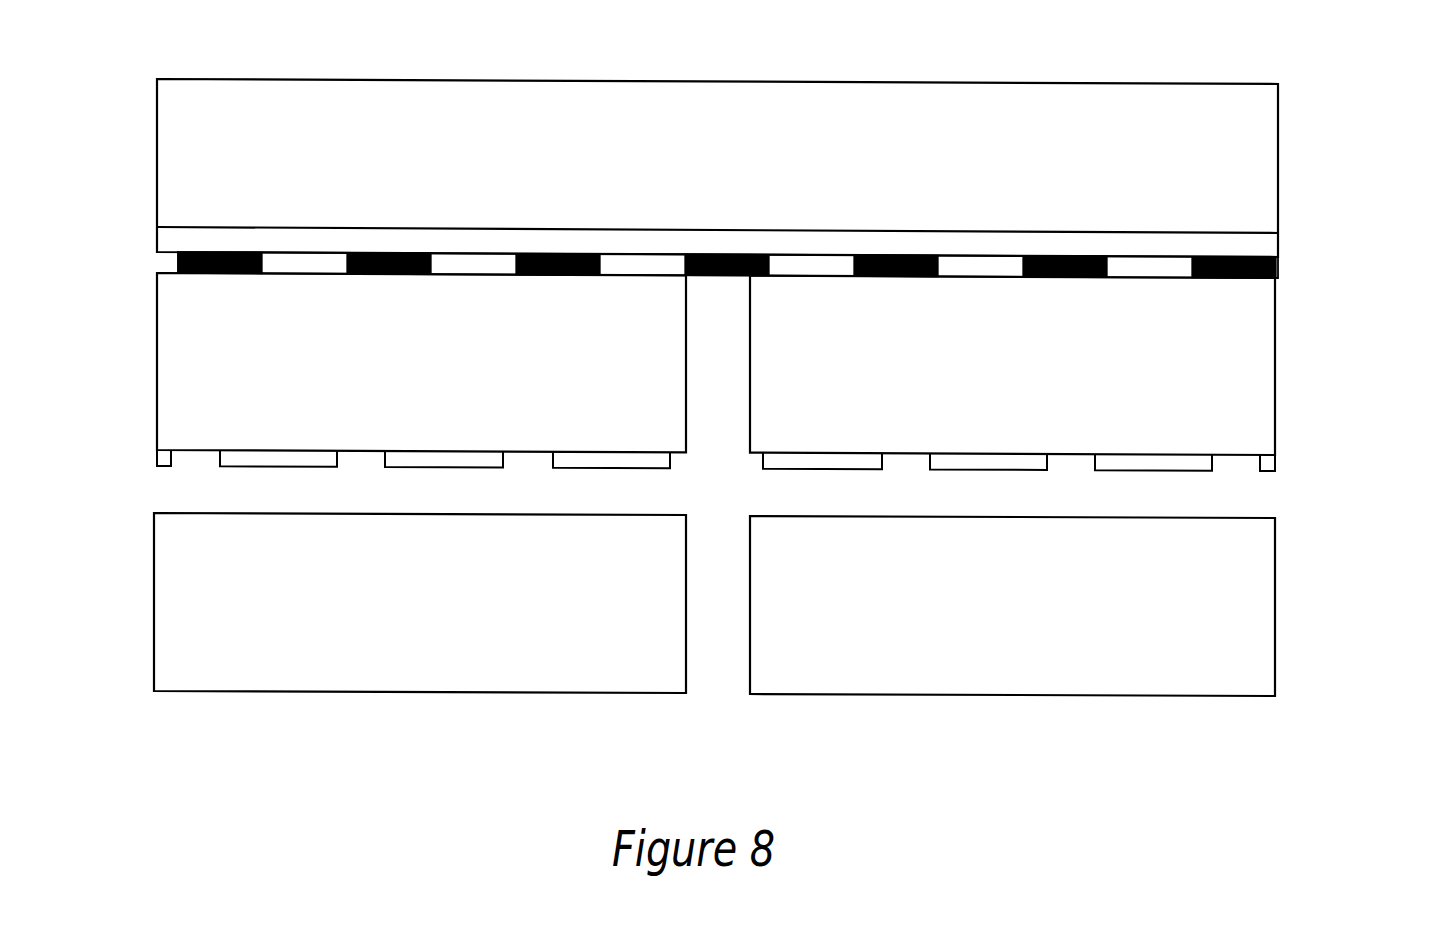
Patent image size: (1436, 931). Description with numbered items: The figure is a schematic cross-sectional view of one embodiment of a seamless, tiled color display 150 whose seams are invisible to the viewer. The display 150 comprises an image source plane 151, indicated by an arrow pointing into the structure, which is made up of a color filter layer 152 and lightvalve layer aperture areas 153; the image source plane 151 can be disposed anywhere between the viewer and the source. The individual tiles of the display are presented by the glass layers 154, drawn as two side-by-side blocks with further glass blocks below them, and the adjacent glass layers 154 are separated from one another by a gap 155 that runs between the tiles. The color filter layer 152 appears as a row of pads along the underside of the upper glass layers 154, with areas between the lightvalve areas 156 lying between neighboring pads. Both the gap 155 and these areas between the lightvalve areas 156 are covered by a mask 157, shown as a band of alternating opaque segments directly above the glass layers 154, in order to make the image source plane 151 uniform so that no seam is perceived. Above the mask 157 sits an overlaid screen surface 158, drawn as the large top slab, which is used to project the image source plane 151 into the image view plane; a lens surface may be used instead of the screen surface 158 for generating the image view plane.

The seamless display 150 is at (1294, 104).
The image source plane 151 is at (186, 487).
The color filter layer 152 is at (255, 457).
The lightvalve layer aperture areas 153 is at (1208, 523).
The glass layers 154 is at (466, 381).
The gap 155 is at (722, 655).
The areas between the lightvalve areas 156 is at (518, 455).
The mask 157 is at (177, 262).
The screen surface 158 is at (819, 242).